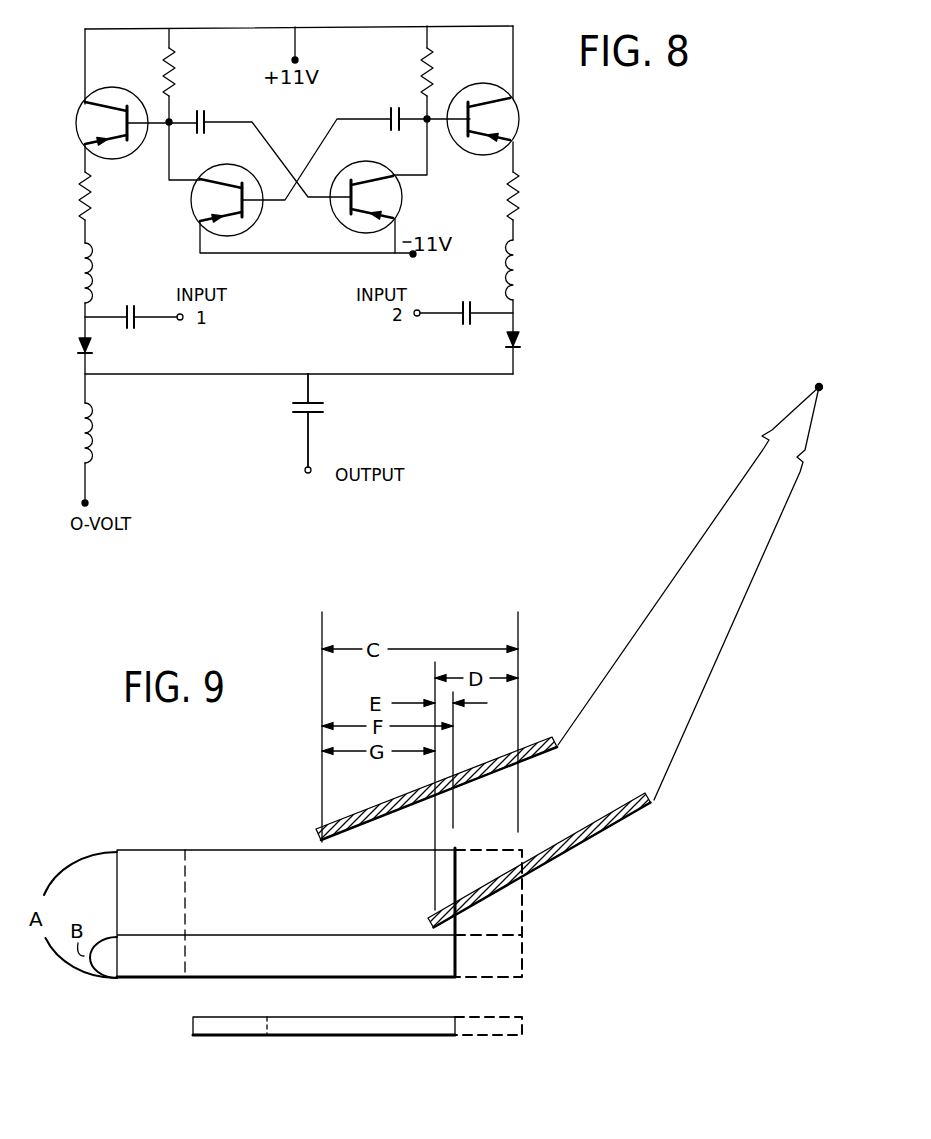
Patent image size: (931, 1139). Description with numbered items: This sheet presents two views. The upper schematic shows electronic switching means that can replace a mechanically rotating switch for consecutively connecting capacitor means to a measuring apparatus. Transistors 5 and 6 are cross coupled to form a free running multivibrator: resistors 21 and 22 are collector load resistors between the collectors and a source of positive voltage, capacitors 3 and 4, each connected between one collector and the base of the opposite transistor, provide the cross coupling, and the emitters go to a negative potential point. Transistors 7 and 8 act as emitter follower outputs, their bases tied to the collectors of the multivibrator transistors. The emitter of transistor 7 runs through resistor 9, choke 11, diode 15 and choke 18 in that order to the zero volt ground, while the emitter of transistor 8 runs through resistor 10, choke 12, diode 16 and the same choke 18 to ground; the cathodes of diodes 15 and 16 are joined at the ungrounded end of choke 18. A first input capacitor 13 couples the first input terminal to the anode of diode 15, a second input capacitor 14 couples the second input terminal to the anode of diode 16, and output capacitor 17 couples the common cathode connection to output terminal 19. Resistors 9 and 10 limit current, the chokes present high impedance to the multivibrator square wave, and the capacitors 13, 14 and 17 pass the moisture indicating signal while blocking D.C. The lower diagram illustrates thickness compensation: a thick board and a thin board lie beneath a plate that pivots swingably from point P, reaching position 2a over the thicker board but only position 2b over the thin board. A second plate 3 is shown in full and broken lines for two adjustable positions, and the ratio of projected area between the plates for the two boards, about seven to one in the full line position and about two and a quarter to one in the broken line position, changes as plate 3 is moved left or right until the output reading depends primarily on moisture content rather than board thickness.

In FIG. 8, the capacitor 3 is at (196, 109).
In FIG. 9, the capacitor 3 is at (355, 1040).
In FIG. 8, the capacitor 4 is at (392, 108).
In FIG. 8, the transistor 5 is at (196, 218).
In FIG. 8, the transistor 6 is at (398, 211).
In FIG. 8, the transistor 7 is at (77, 127).
In FIG. 8, the transistor 8 is at (520, 122).
In FIG. 8, the resistor 9 is at (88, 199).
In FIG. 8, the resistor 10 is at (514, 197).
In FIG. 8, the choke 11 is at (86, 271).
In FIG. 8, the choke 12 is at (514, 270).
In FIG. 8, the first input capacitor 13 is at (133, 310).
In FIG. 8, the second input capacitor 14 is at (467, 304).
In FIG. 8, the diode 15 is at (84, 353).
In FIG. 8, the diode 16 is at (516, 351).
In FIG. 8, the output capacitor 17 is at (346, 410).
In FIG. 8, the choke 18 is at (86, 438).
In FIG. 8, the output terminal 19 is at (313, 468).
In FIG. 8, the collector load resistor 21 is at (167, 57).
In FIG. 8, the collector load resistor 22 is at (431, 63).
In FIG. 9, the plate position 2a is at (552, 761).
In FIG. 9, the plate position 2b is at (632, 822).
In FIG. 9, the pivot point P is at (818, 384).